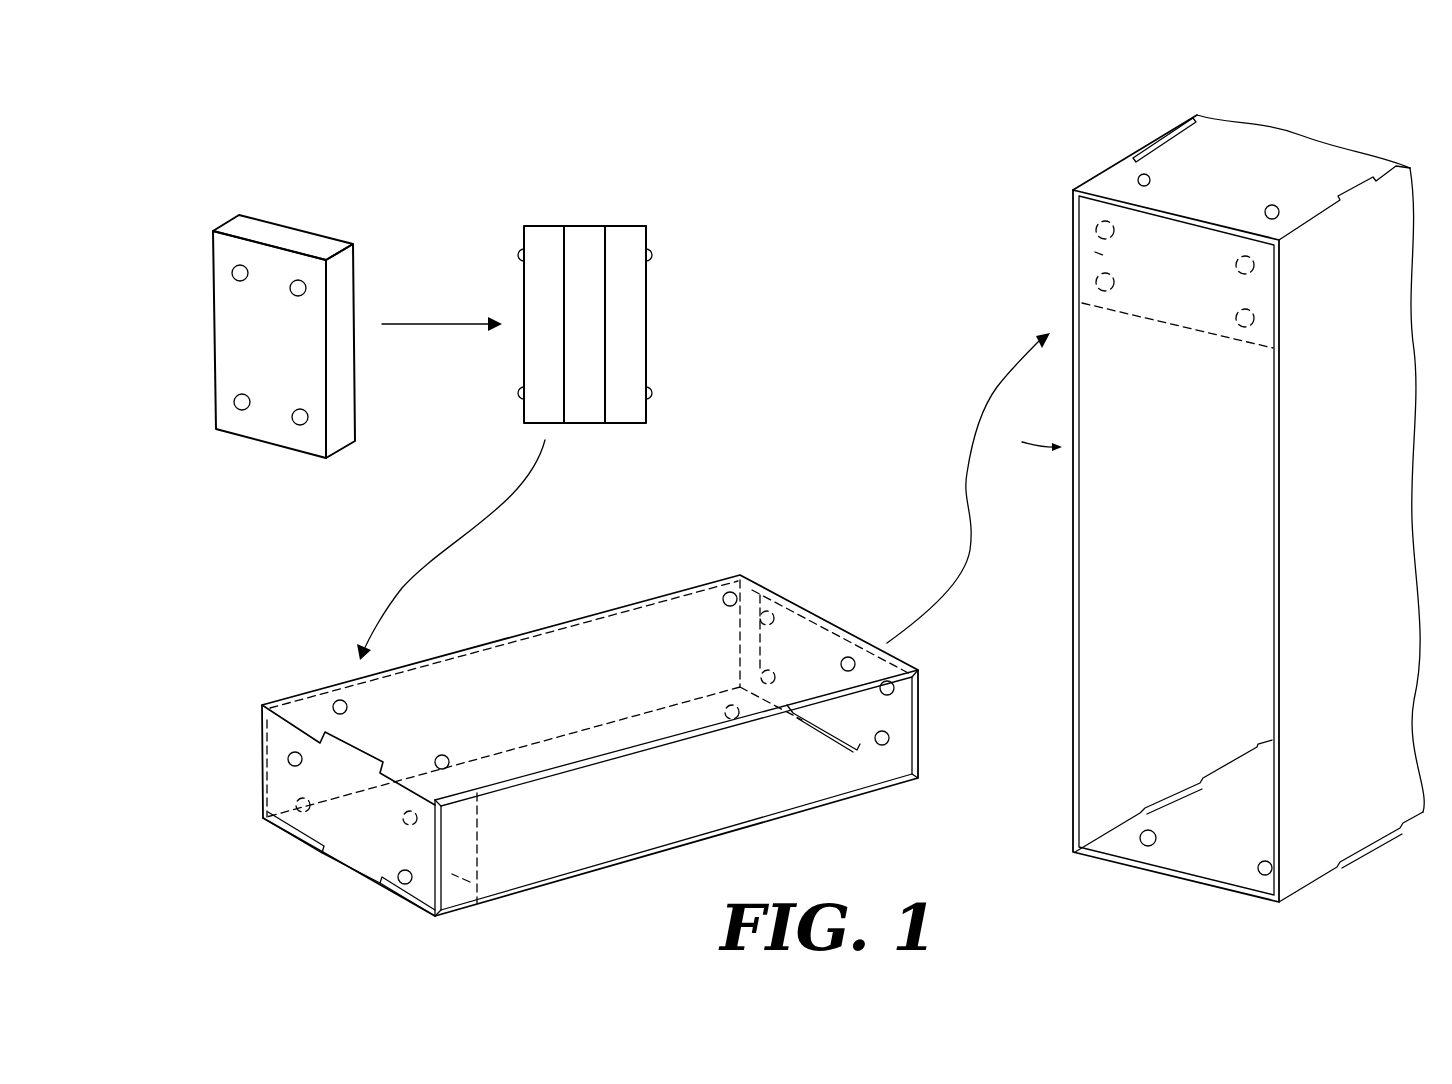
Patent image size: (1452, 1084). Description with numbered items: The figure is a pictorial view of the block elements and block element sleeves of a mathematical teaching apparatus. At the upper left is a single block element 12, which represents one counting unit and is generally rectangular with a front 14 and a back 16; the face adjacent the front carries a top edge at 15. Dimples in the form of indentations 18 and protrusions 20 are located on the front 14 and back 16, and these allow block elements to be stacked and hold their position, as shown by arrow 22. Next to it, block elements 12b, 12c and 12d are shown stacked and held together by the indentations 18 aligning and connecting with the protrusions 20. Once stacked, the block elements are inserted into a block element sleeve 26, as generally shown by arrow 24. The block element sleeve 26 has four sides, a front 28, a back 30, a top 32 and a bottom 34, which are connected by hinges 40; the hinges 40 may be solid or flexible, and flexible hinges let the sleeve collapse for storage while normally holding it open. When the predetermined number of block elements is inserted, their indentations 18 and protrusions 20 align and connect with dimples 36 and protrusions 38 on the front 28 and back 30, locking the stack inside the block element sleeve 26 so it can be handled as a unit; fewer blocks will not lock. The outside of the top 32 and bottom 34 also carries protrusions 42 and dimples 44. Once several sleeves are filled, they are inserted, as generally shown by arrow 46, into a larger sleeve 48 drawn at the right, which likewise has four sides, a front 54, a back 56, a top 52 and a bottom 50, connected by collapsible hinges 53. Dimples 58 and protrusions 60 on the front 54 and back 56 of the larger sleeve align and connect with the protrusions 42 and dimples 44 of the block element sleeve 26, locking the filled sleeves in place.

The block element 12 is at (358, 551).
The block element 12b is at (540, 226).
The block element 12c is at (585, 226).
The block element 12d is at (620, 226).
The front 14 is at (262, 325).
The top edge of plate 15 is at (318, 244).
The back 16 is at (366, 266).
The indentations 18 is at (232, 272).
The protrusions 20 is at (300, 296).
The arrow 22 is at (432, 330).
The arrow 24 is at (485, 515).
The block element sleeve 26 is at (540, 608).
The front 28 is at (290, 790).
The back 30 is at (935, 728).
The top 32 is at (622, 632).
The bottom 34 is at (625, 808).
The dimples 36 is at (767, 612).
The protrusions 38 is at (760, 676).
The hinges 40 is at (355, 750).
The protrusions 42 is at (728, 592).
The dimples 44 is at (850, 658).
The arrow 46 is at (812, 613).
The larger sleeve 48 is at (1027, 440).
The bottom 50 is at (1070, 527).
The top 52 is at (1330, 508).
The hinges 53 is at (1155, 143).
The front 54 is at (1232, 135).
The back 56 is at (1210, 830).
The dimples 58 is at (1138, 178).
The protrusions 60 is at (1274, 208).